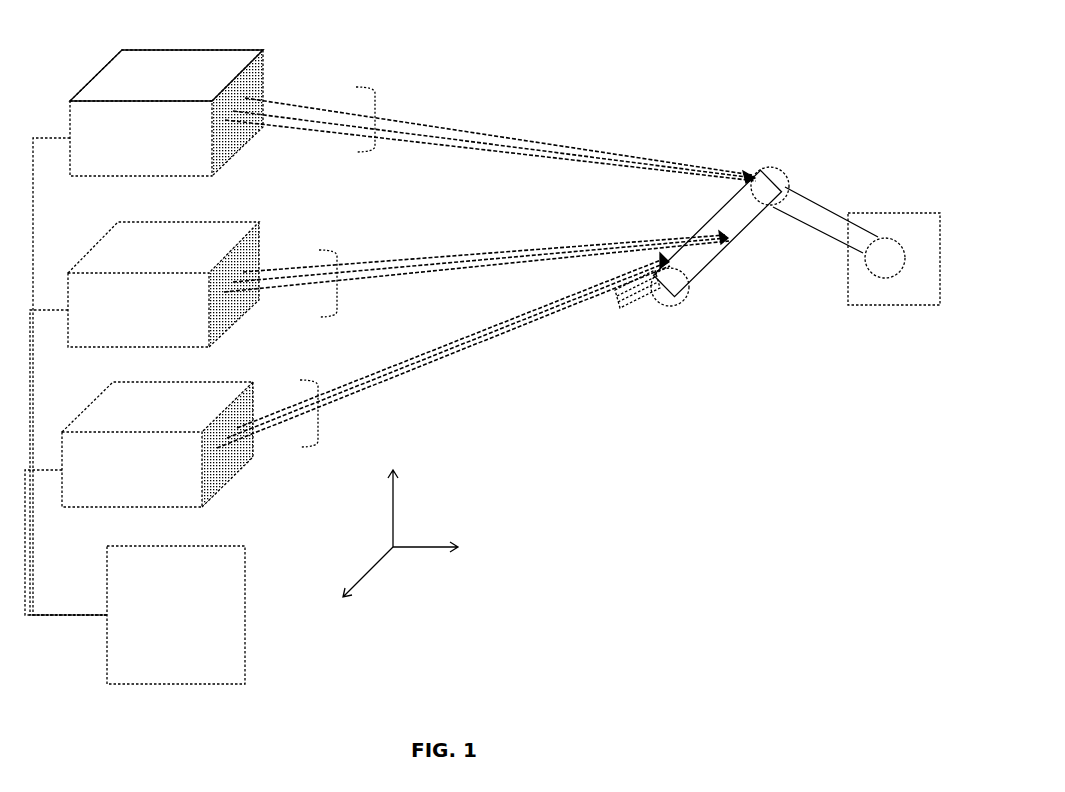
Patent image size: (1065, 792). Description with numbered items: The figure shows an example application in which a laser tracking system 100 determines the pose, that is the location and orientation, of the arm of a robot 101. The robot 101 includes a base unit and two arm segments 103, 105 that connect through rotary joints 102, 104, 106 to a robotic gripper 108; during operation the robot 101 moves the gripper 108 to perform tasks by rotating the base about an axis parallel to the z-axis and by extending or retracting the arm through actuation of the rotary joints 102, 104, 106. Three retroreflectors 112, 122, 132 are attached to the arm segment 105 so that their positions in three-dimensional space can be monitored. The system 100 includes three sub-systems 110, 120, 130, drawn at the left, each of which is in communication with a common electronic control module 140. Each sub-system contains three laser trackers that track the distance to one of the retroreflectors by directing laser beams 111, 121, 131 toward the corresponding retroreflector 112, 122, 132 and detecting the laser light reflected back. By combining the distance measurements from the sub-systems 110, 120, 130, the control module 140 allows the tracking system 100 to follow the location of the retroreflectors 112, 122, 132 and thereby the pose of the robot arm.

The laser tracking system 100 is at (540, 646).
The robot 101 is at (751, 239).
The rotary joint 102 is at (885, 260).
The arm segment 103 is at (828, 208).
The rotary joint 104 is at (779, 168).
The arm segment 105 is at (706, 226).
The rotary joint 106 is at (686, 302).
The robotic gripper 108 is at (635, 308).
The sub-system 110 is at (151, 479).
The laser beams 111 is at (310, 450).
The retroreflector 112 is at (668, 258).
The sub-system 120 is at (157, 318).
The laser beams 121 is at (330, 320).
The retroreflector 122 is at (733, 246).
The sub-system 130 is at (159, 146).
The laser beams 131 is at (368, 155).
The retroreflector 132 is at (752, 172).
The electronic control module 140 is at (194, 625).